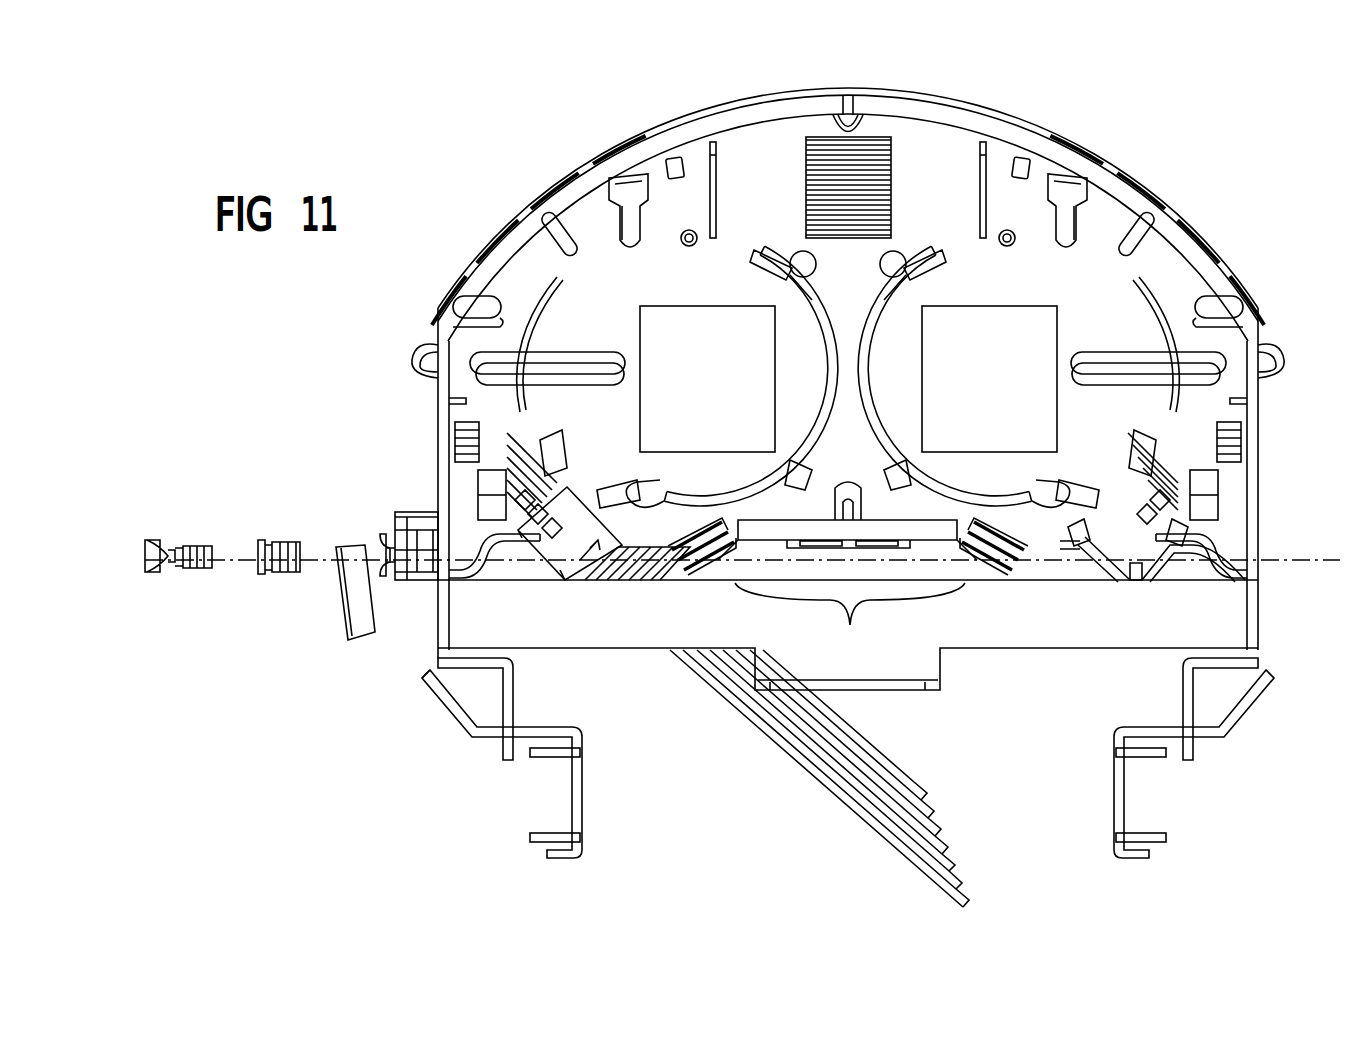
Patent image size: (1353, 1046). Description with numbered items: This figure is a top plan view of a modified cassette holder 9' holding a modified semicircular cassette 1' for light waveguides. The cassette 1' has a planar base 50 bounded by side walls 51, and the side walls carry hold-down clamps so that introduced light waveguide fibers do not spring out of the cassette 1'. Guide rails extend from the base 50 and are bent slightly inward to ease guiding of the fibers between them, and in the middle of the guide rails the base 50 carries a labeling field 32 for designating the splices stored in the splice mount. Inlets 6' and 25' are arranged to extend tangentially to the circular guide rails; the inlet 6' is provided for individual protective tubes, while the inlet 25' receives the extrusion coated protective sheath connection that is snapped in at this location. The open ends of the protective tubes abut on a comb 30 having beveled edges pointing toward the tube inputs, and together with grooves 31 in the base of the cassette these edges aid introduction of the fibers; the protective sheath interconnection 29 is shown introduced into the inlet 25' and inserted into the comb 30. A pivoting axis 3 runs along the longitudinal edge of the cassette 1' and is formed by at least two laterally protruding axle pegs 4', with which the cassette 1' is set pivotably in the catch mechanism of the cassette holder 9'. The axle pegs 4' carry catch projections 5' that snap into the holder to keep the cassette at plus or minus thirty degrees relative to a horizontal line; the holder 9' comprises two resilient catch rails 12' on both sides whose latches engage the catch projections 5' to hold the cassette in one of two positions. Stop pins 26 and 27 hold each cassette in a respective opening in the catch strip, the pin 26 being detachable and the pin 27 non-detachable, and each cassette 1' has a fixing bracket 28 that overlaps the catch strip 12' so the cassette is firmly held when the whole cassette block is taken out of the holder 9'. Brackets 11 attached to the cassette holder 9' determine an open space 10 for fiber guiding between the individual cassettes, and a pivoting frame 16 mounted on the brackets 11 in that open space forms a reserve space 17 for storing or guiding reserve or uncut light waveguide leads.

The cassette 1' is at (848, 372).
The side walls 51 is at (773, 110).
The labeling field 32 is at (705, 330).
The base 50 is at (1012, 287).
The grooves 31 is at (520, 438).
The comb 30 is at (570, 487).
The protective sheath interconnection 29 is at (575, 570).
The inlet 25' is at (1152, 575).
The pivoting axis 3 is at (1320, 565).
The catch projections 5' is at (409, 506).
The stop pin 26 is at (196, 544).
The stop pin 27 is at (286, 543).
The fixing bracket 28 is at (352, 606).
The cassette holder 9' is at (848, 643).
The inlet 6' is at (850, 628).
The reserve space 17 is at (672, 752).
The brackets 11 is at (460, 728).
The pivoting frame 16 is at (578, 850).
The axle pegs 4' is at (401, 629).
The resilient catch rails 12' is at (410, 634).
The open space 10 is at (1140, 683).